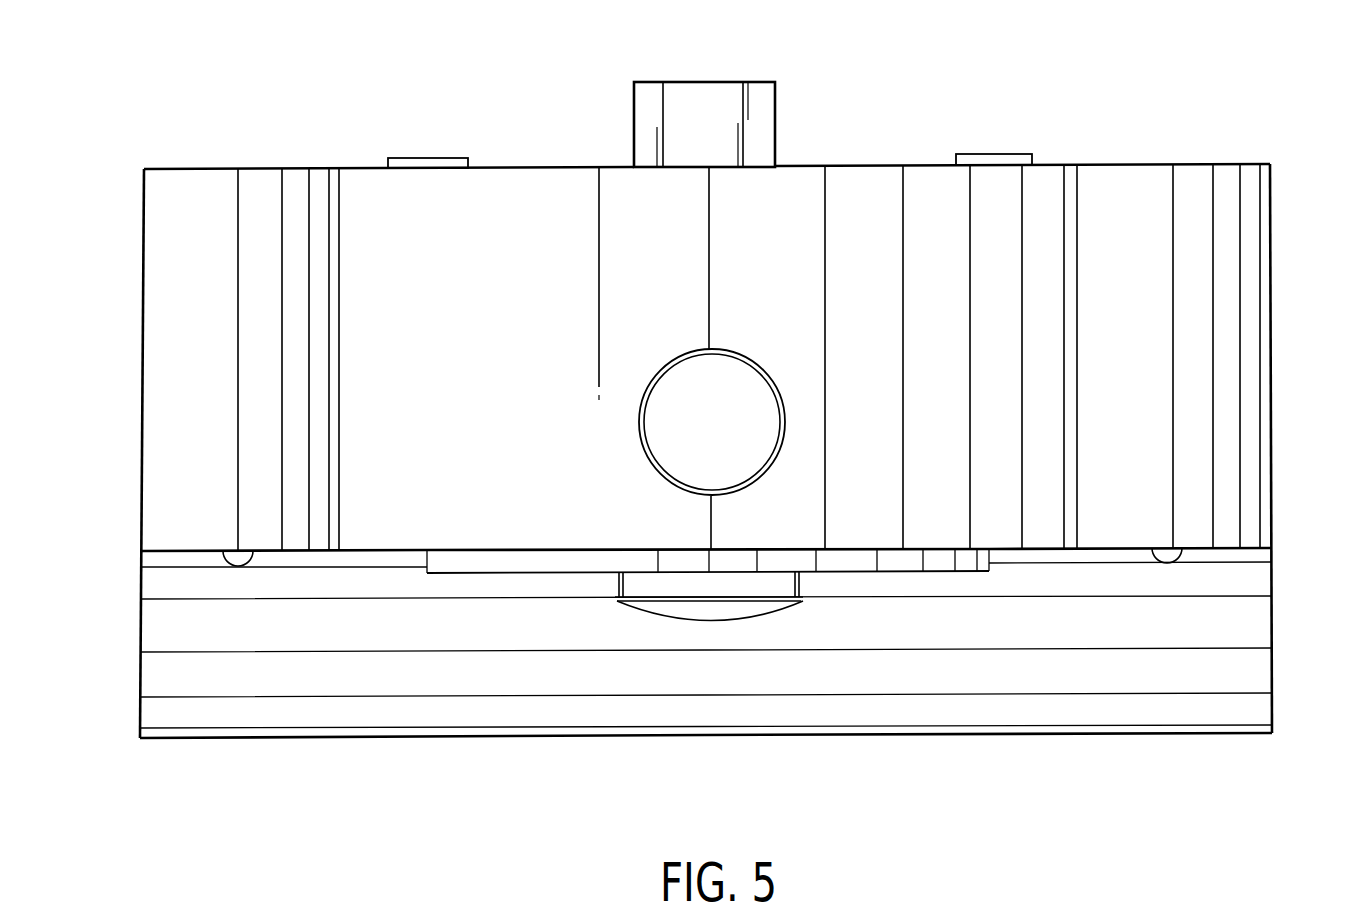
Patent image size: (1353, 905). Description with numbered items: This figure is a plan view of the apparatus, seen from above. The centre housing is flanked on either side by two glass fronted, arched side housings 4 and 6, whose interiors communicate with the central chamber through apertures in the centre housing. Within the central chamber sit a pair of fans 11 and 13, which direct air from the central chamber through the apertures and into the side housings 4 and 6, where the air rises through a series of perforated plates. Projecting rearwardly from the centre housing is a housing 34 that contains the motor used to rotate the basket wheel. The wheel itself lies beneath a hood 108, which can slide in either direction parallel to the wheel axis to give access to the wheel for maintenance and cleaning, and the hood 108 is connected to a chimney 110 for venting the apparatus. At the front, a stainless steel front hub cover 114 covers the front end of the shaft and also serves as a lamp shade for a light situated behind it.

The side housing 4 is at (167, 211).
The side housing 6 is at (1248, 214).
The fan 11 is at (431, 164).
The fan 13 is at (990, 160).
The housing 34 is at (648, 98).
The hood 108 is at (398, 231).
The chimney 110 is at (652, 464).
The front hub cover 114 is at (718, 613).